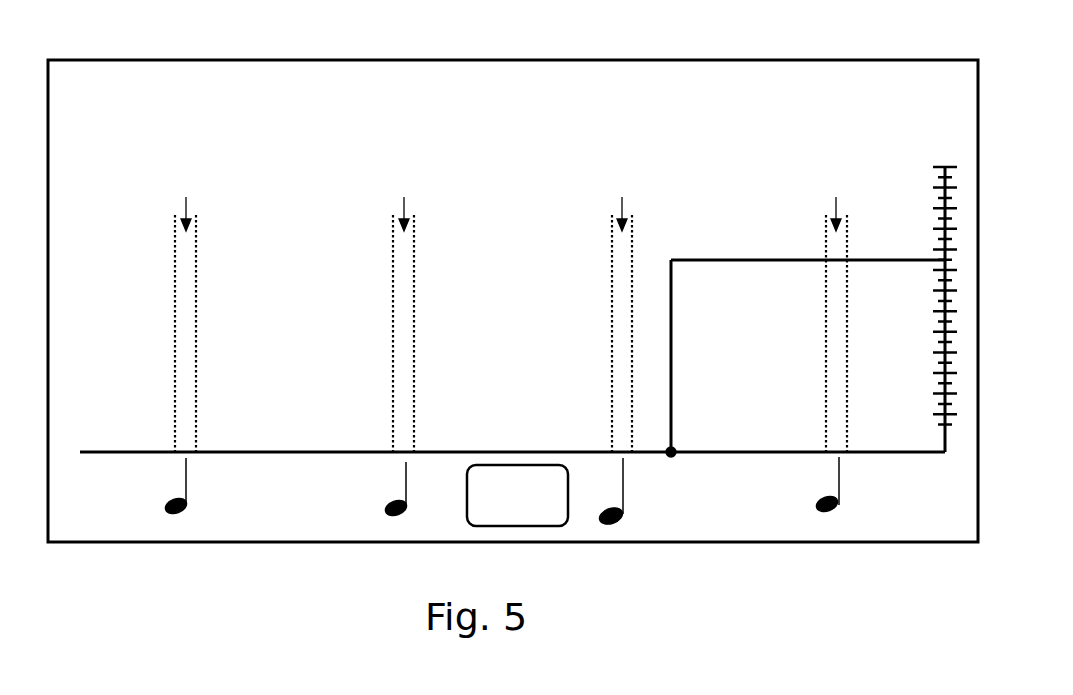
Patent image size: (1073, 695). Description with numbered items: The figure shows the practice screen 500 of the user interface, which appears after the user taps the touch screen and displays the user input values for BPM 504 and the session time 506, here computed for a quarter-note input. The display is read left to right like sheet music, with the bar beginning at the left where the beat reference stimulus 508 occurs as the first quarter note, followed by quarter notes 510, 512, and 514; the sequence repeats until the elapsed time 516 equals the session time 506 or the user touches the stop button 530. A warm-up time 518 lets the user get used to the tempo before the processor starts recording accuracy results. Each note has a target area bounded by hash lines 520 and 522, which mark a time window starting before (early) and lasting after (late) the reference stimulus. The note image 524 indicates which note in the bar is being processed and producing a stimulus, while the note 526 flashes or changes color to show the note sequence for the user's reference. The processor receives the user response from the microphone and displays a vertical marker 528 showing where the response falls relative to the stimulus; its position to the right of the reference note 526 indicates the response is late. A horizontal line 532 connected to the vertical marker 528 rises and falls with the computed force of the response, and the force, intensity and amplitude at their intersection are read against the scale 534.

The screen 500 is at (494, 59).
The BPM 504 is at (172, 108).
The session time 506 is at (300, 108).
The beat reference stimulus 508 is at (186, 199).
The quarter note 510 is at (404, 199).
The quarter note 512 is at (622, 199).
The quarter note 514 is at (836, 199).
The elapsed time 516 is at (580, 128).
The warm-up time 518 is at (917, 125).
The hash line 520 is at (172, 276).
The hash line 522 is at (200, 291).
The note image 524 is at (192, 483).
The note 526 is at (628, 492).
The vertical marker 528 is at (675, 388).
The stop button 530 is at (550, 523).
The horizontal line 532 is at (705, 261).
The scale 534 is at (958, 229).